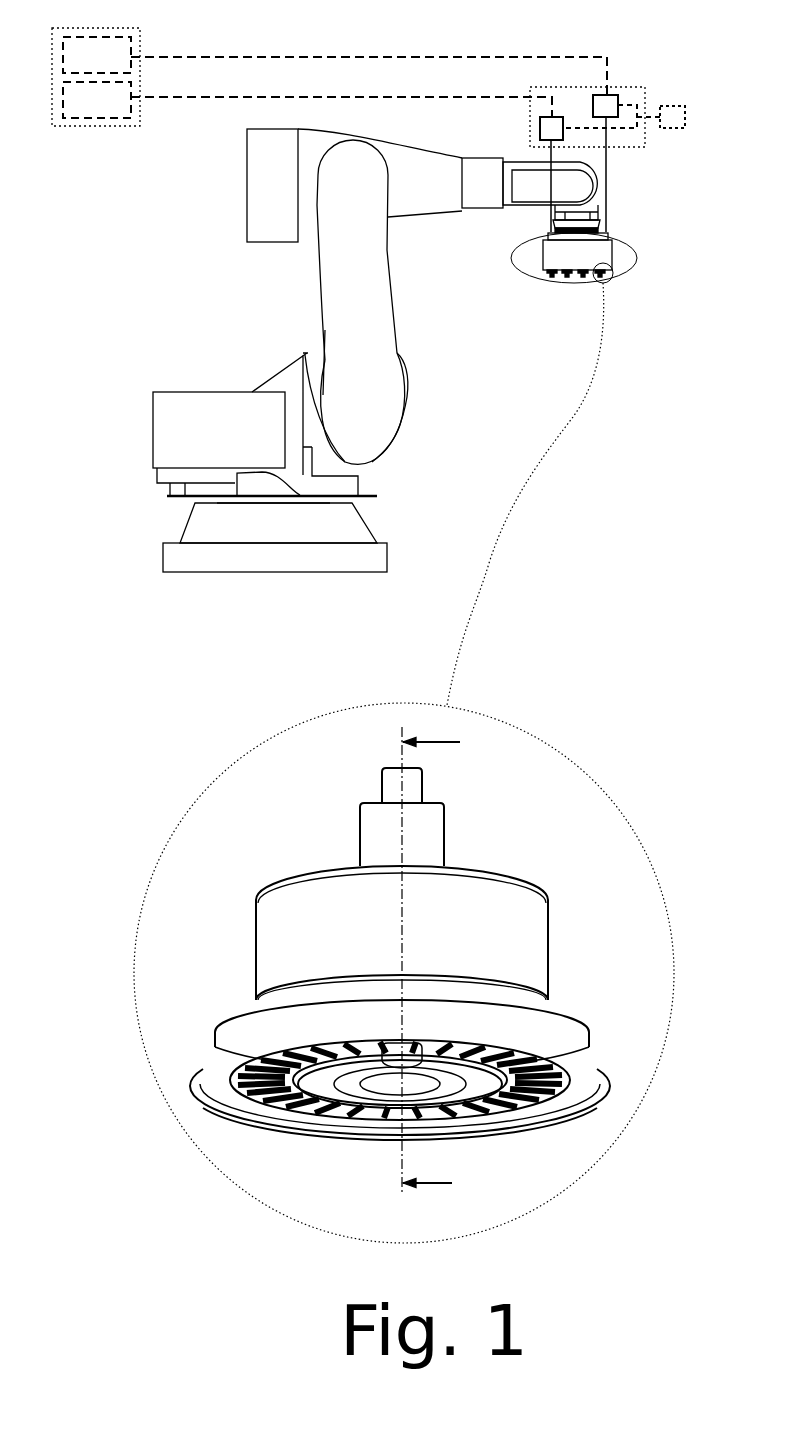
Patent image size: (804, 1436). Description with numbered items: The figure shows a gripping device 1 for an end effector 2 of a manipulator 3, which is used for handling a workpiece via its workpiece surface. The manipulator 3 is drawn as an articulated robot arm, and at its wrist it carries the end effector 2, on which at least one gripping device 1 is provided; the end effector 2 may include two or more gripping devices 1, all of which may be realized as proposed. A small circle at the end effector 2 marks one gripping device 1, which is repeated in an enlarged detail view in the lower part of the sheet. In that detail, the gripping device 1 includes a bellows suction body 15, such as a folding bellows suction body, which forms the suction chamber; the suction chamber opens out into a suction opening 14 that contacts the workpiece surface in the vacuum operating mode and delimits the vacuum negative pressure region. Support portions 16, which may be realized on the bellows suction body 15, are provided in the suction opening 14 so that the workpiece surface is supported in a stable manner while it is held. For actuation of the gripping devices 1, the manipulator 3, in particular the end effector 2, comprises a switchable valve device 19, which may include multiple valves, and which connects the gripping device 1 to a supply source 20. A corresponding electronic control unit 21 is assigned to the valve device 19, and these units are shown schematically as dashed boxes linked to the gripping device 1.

The gripping device 1 is at (436, 779).
The end effector 2 is at (683, 233).
The manipulator 3 is at (135, 590).
The suction opening 14 is at (578, 1092).
The bellows suction body 15 is at (515, 933).
The support portions 16 is at (388, 1120).
The switchable valve device 19 is at (570, 87).
The supply source 20 is at (80, 128).
The electronic control unit 21 is at (672, 105).